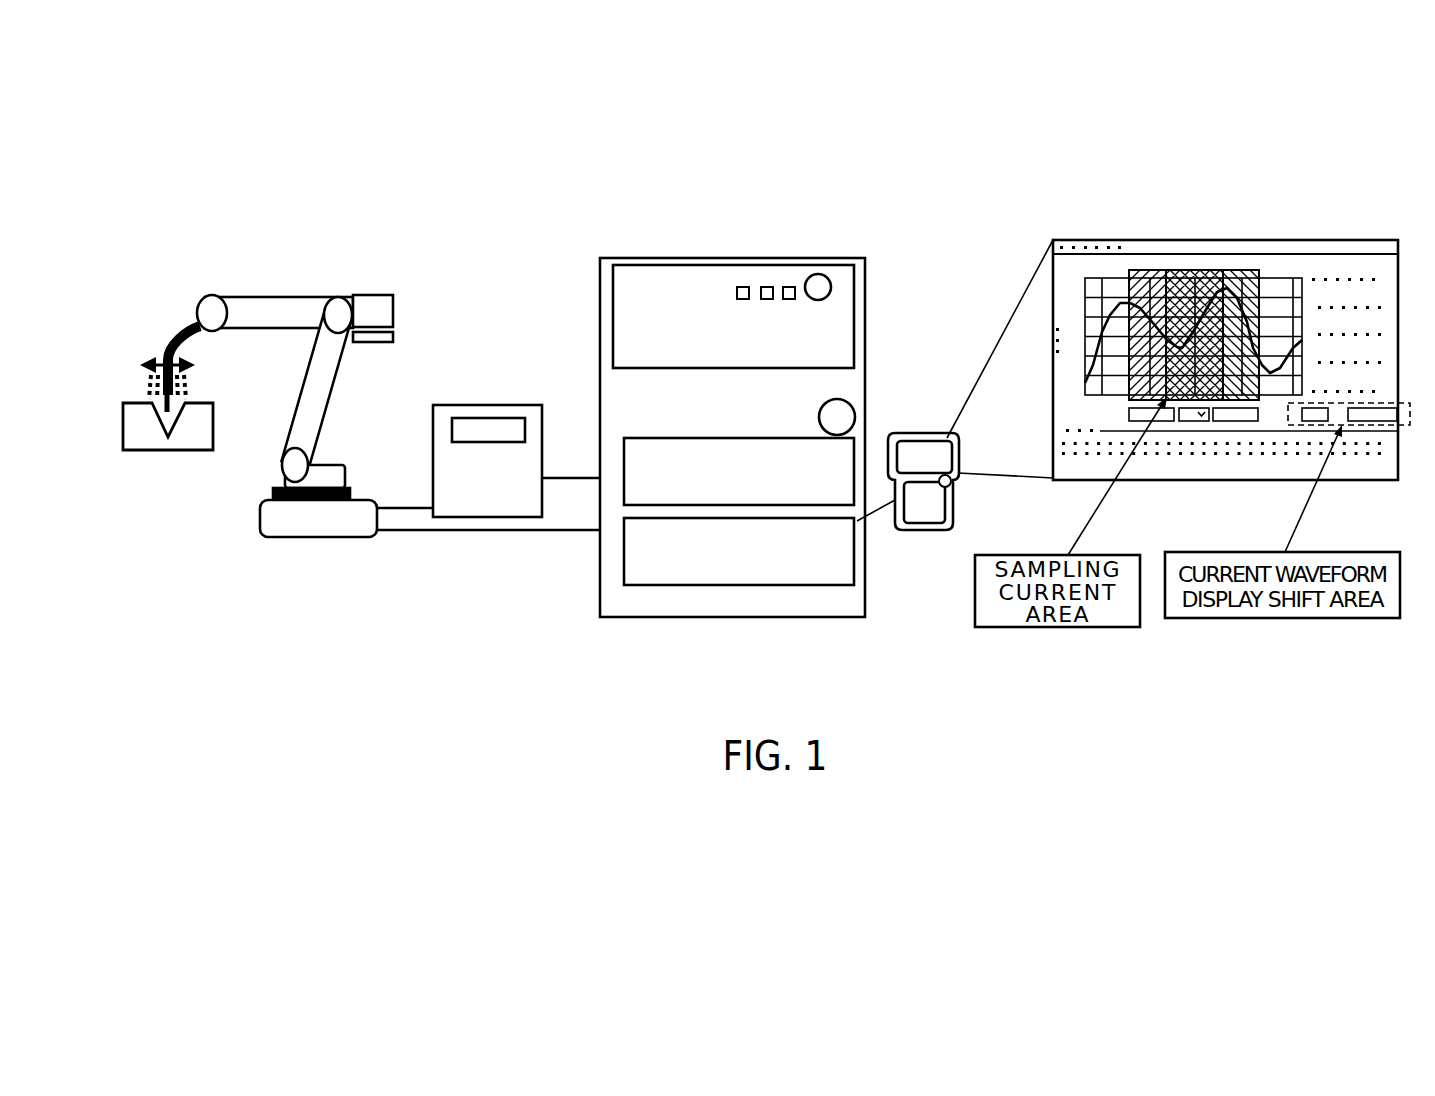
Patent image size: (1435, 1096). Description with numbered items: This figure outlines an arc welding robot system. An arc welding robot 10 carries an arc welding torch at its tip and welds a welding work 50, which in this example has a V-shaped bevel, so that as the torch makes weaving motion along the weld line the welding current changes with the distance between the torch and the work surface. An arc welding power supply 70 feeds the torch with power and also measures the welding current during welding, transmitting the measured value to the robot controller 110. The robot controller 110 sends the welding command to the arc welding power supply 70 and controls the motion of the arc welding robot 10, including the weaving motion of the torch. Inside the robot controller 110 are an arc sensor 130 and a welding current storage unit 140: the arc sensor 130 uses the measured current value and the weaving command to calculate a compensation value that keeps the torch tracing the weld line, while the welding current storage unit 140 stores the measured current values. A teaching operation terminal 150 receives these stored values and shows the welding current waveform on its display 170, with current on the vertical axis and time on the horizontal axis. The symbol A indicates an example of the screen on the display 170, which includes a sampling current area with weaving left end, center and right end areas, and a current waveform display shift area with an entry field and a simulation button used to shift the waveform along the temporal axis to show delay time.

The arc welding robot 10 is at (323, 538).
The welding work 50 is at (172, 451).
The arc welding power supply 70 is at (465, 403).
The robot controller 110 is at (747, 256).
The arc sensor 130 is at (703, 437).
The welding current storage unit 140 is at (742, 586).
The teaching operation terminal 150 is at (908, 488).
The display 170 is at (908, 437).
The display screen A is at (1223, 238).